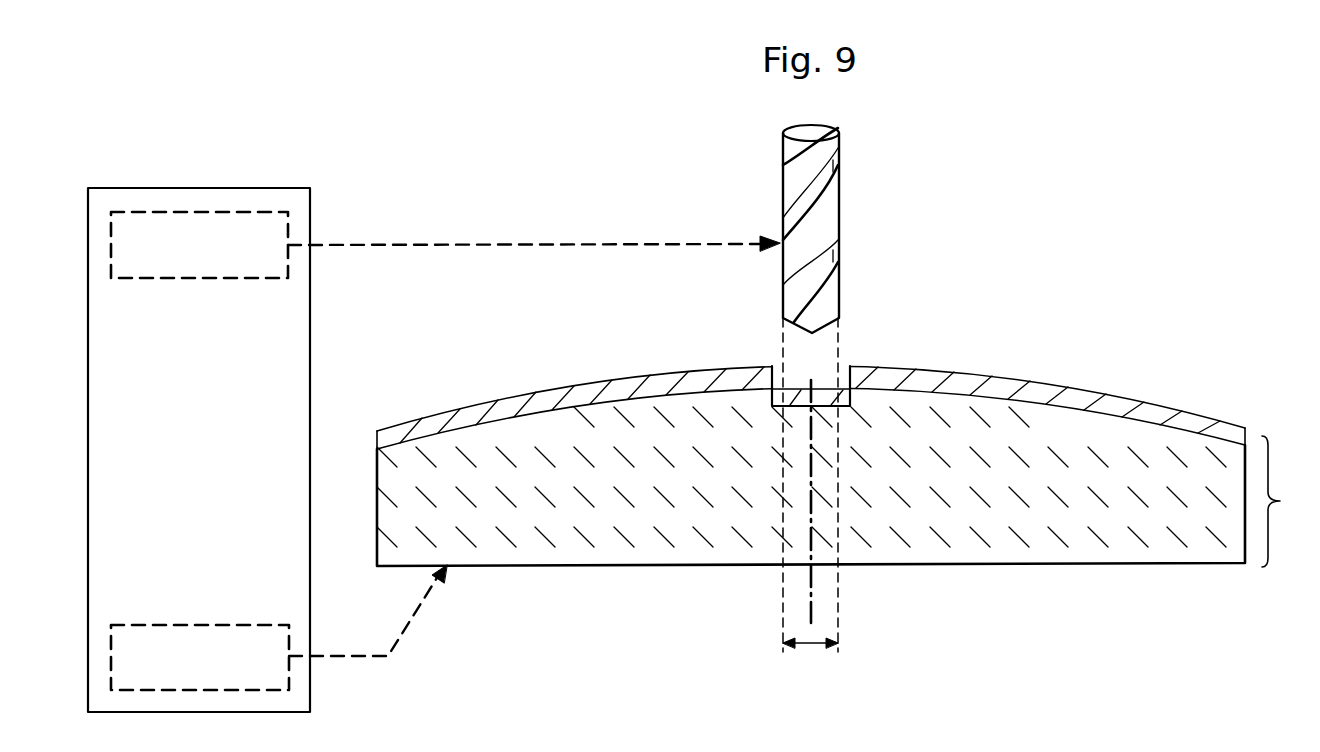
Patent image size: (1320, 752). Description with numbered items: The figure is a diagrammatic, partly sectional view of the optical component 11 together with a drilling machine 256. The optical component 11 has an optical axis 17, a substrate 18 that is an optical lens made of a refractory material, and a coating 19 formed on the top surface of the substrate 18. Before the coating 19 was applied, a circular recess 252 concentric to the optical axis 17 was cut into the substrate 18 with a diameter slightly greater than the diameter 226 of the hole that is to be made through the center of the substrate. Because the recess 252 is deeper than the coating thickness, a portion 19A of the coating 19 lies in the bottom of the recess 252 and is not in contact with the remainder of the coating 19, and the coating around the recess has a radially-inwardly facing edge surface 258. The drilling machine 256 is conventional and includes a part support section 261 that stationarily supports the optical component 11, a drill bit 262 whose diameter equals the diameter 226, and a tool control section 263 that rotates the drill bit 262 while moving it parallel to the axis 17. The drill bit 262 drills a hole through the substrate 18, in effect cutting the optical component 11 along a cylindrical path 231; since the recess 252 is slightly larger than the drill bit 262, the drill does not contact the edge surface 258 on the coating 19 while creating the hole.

The optical component 11 is at (1286, 501).
The optical axis 17 is at (810, 600).
The substrate 18 is at (1077, 503).
The coating 19 is at (1183, 418).
The portion of the coating 19A is at (755, 398).
The diameter 226 is at (812, 646).
The cylindrical path 231 is at (840, 625).
The circular recess 252 is at (818, 398).
The drilling machine 256 is at (220, 486).
The edge surface 258 is at (777, 362).
The part support section 261 is at (176, 623).
The drill bit 262 is at (843, 226).
The tool control section 263 is at (181, 280).